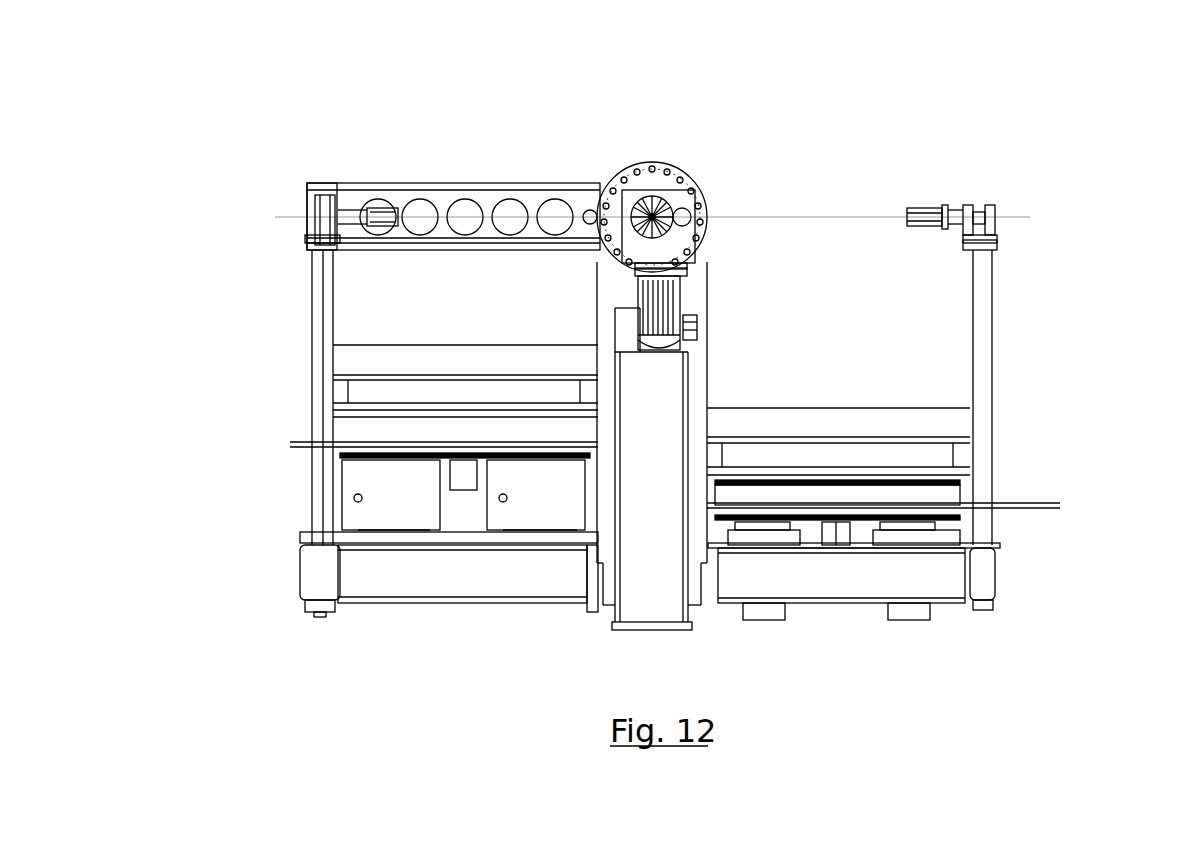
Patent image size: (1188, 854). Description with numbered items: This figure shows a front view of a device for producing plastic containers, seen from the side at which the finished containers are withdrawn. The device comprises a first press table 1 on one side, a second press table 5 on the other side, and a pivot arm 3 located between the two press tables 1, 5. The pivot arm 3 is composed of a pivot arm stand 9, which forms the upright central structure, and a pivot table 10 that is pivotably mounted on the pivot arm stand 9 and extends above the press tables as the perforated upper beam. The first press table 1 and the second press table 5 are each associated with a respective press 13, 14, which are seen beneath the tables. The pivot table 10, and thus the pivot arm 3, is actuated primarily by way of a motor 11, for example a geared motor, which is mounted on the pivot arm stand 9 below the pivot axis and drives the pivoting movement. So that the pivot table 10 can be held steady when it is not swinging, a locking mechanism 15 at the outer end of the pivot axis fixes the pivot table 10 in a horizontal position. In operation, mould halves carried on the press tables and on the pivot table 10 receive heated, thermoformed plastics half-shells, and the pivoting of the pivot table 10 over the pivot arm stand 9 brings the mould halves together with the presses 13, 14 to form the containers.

The first press table 1 is at (365, 430).
The pivot arm 3 is at (395, 190).
The second press table 5 is at (915, 490).
The pivot arm stand 9 is at (665, 568).
The pivot table 10 is at (445, 190).
The motor 11 is at (665, 318).
The press 13 is at (457, 483).
The press 14 is at (838, 530).
The locking mechanism 15 is at (950, 215).